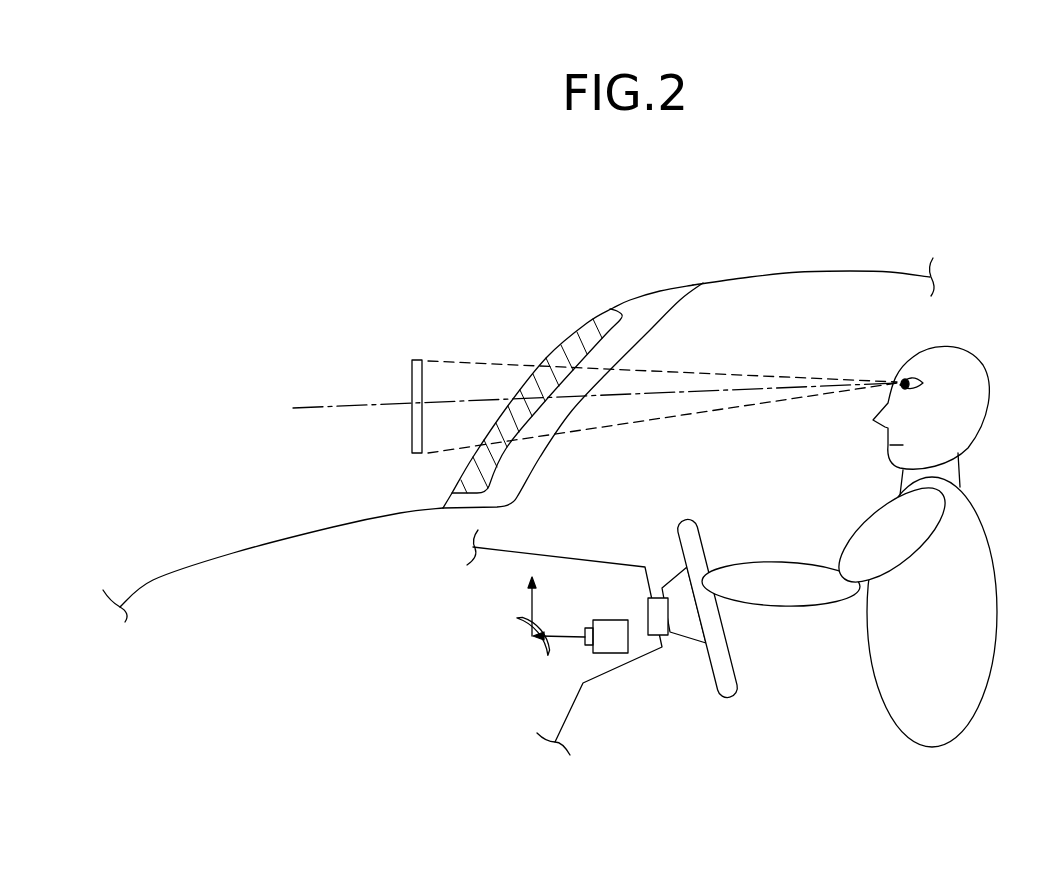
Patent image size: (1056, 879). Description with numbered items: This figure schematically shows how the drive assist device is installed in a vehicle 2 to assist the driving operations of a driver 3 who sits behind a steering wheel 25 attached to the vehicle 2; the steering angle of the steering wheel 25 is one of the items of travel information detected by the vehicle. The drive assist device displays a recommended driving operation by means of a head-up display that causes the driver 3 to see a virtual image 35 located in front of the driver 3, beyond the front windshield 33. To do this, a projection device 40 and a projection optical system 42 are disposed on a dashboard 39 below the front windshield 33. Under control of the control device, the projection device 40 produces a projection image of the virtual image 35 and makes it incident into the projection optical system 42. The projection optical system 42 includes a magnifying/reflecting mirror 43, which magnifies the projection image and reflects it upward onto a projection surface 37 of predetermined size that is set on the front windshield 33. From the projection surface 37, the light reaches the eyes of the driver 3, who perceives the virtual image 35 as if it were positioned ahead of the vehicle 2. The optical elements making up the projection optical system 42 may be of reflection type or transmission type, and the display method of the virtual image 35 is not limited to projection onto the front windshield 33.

The vehicle 2 is at (844, 273).
The driver 3 is at (990, 363).
The steering wheel 25 is at (705, 537).
The front windshield 33 is at (635, 310).
The virtual image 35 is at (412, 380).
The projection surface 37 is at (573, 336).
The dashboard 39 is at (574, 553).
The projection device 40 is at (610, 617).
The projection optical system 42 is at (484, 670).
The magnifying/reflecting mirror 43 is at (517, 636).